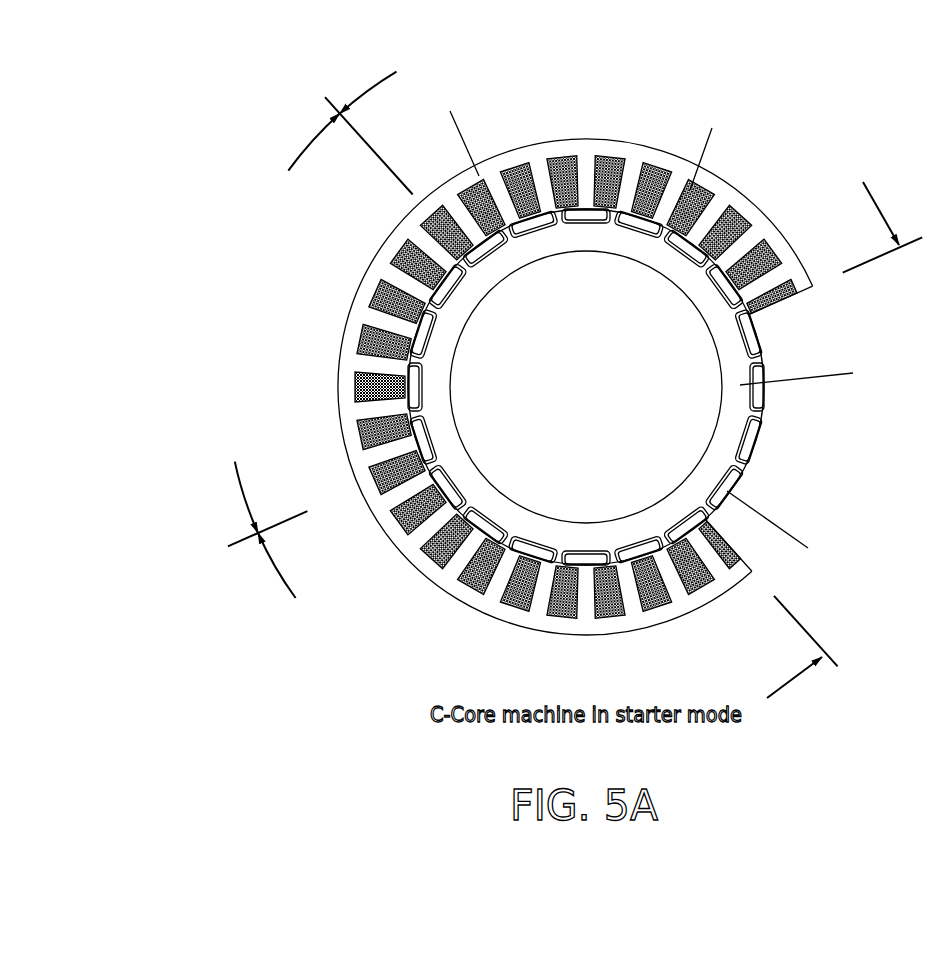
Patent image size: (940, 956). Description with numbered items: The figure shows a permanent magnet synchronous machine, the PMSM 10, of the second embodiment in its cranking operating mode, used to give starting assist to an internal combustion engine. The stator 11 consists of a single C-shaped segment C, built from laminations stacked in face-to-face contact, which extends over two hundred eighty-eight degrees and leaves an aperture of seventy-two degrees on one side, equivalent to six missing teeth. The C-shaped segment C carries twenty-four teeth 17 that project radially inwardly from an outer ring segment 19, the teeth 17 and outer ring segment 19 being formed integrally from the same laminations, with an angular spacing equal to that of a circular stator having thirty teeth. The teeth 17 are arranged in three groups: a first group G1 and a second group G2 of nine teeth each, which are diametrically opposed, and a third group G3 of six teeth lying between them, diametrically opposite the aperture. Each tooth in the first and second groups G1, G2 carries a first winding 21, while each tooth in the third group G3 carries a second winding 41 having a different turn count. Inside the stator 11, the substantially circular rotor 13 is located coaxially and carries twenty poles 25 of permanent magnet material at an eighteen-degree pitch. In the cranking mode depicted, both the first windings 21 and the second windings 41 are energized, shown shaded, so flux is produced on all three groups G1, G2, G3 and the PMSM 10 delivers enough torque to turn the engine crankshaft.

The PMSM 10 is at (250, 648).
The stator 11 is at (352, 383).
The rotor 13 is at (428, 388).
The teeth 17 is at (457, 567).
The outer ring segment 19 is at (415, 560).
The first windings 21 is at (725, 222).
The poles 25 is at (424, 335).
The second windings 41 is at (363, 350).
The first group G1 is at (636, 150).
The second group G2 is at (543, 625).
The third group G3 is at (353, 308).
The C-shaped segment C is at (297, 426).